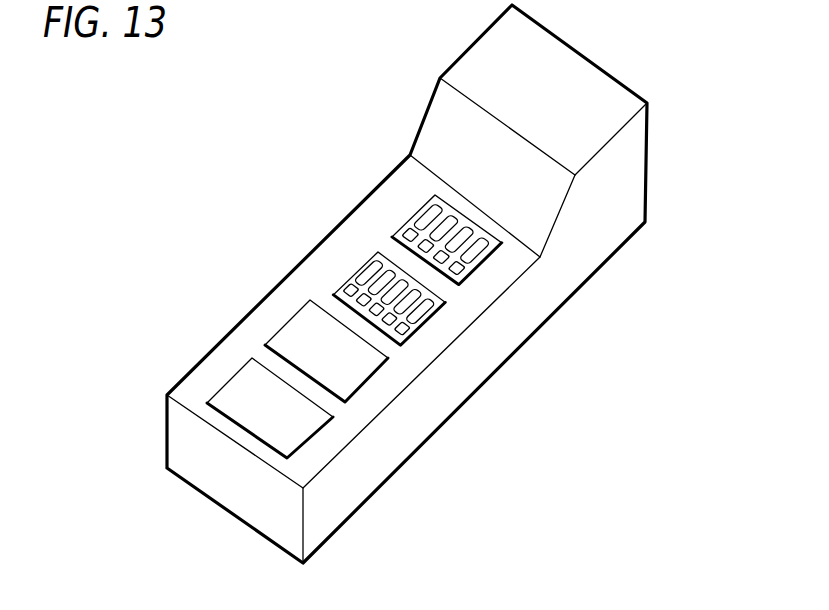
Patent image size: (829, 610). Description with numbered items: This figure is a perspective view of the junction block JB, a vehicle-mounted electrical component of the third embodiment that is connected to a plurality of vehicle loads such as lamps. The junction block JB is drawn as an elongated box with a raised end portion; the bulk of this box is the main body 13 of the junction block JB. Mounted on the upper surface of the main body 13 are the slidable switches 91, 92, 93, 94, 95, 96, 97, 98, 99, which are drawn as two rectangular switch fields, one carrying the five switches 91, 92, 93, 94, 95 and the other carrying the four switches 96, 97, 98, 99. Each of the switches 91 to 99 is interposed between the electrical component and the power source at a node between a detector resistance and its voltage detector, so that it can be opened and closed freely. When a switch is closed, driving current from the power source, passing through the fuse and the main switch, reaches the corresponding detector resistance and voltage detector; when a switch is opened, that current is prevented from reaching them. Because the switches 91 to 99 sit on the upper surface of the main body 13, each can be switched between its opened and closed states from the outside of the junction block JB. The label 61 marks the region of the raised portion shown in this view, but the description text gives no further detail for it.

The main body 13 is at (389, 479).
The junction block JB is at (660, 277).
The connector section 61-69 61 is at (411, 96).
The slidable switch 91 is at (357, 291).
The slidable switch 92 is at (373, 262).
The slidable switch 93 is at (418, 306).
The slidable switch 94 is at (406, 312).
The slidable switch 95 is at (438, 303).
The slidable switch 96 is at (412, 230).
The slidable switch 97 is at (442, 214).
The slidable switch 98 is at (473, 236).
The slidable switch 99 is at (462, 265).